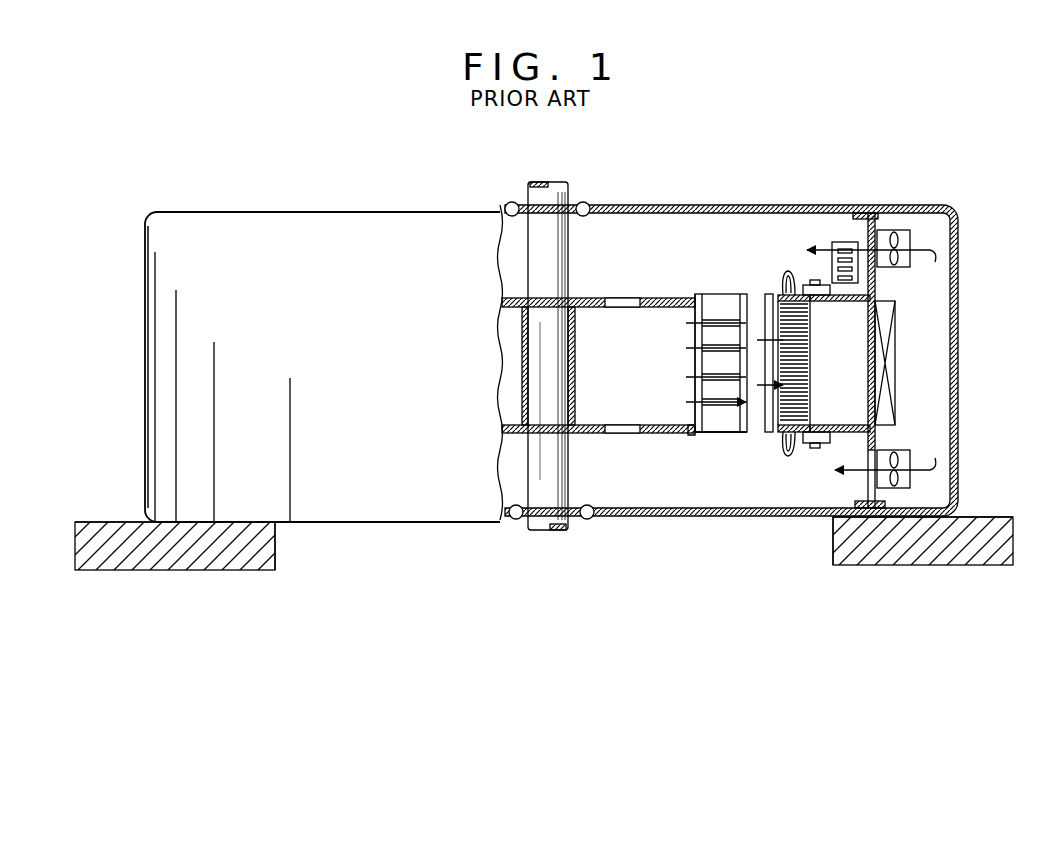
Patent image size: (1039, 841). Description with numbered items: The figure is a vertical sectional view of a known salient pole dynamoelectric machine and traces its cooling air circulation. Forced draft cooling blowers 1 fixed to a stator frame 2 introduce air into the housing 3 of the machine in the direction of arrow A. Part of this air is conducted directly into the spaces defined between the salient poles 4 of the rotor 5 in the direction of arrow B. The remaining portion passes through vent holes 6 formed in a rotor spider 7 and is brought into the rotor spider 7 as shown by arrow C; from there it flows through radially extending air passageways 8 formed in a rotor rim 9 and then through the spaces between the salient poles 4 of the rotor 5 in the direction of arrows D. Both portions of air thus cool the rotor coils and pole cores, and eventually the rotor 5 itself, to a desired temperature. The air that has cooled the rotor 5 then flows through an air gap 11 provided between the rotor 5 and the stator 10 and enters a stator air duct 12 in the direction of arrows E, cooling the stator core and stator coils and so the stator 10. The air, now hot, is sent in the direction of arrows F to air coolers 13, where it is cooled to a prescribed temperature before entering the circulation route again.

The forced draft cooling blower 1 is at (907, 232).
The stator frame 2 is at (878, 286).
The housing 3 is at (655, 517).
The salient pole 4 is at (732, 440).
The rotor 5 is at (707, 287).
The vent hole 6 is at (609, 303).
The rotor spider 7 is at (663, 299).
The radially extending air passageway 8 is at (731, 382).
The rotor rim 9 is at (707, 432).
The stator 10 is at (807, 450).
The air gap 11 is at (786, 269).
The stator air duct 12 is at (794, 288).
The air cooler 13 is at (894, 410).
The arrow A is at (820, 249).
The arrow B is at (758, 306).
The arrow C is at (622, 318).
The arrows D is at (689, 376).
The arrows E is at (764, 394).
The arrows F is at (918, 395).